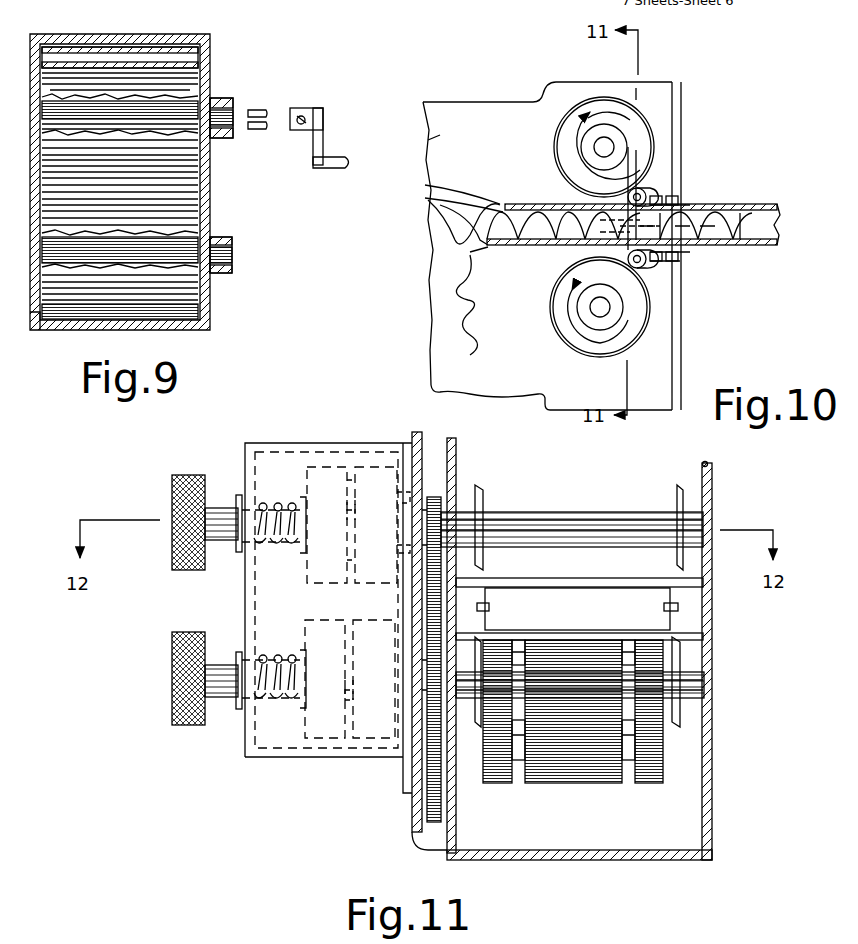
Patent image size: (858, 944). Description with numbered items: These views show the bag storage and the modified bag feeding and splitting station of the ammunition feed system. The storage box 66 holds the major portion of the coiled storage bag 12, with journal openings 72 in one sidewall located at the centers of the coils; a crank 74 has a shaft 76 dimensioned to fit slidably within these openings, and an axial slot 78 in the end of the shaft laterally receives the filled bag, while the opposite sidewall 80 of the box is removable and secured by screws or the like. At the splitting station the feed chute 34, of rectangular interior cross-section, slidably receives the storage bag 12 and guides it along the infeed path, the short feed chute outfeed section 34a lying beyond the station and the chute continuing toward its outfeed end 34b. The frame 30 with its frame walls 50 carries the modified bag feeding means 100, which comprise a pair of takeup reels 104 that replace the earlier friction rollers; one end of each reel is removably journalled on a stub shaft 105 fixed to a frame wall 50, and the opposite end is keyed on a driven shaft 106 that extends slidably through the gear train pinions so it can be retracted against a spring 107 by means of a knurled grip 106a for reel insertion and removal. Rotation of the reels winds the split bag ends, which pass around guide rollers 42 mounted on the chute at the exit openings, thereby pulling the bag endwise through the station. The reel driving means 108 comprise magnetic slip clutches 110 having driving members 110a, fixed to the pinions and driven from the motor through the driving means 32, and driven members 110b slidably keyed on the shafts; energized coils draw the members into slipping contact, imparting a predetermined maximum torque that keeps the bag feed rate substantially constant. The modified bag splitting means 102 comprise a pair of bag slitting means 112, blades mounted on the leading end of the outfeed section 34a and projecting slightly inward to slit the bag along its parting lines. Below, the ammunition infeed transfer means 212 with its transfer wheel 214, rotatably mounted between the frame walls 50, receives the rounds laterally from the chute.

In FIG. 9, the storage bag 12 is at (180, 215).
In FIG. 9, the storage box 66 is at (140, 30).
In FIG. 9, the journal openings 72 is at (233, 120).
In FIG. 9, the crank 74 is at (330, 130).
In FIG. 9, the shaft 76 is at (262, 108).
In FIG. 9, the slot 78 is at (298, 124).
In FIG. 9, the sidewall 80 is at (35, 318).
In FIG. 10, the frame 30 is at (473, 100).
In FIG. 10, the frame walls 50 is at (440, 140).
In FIG. 10, the bag feeding means 100 is at (554, 152).
In FIG. 11, the bag feeding means 100 is at (532, 510).
In FIG. 10, the takeup reels 104 is at (642, 160).
In FIG. 11, the takeup reels 104 is at (604, 492).
In FIG. 10, the guide rollers 42 is at (648, 193).
In FIG. 10, the bag splitting means 102 is at (672, 205).
In FIG. 10, the bag slitting means 112 is at (670, 261).
In FIG. 10, the feed chute 34 is at (760, 215).
In FIG. 11, the feed chute 34 is at (574, 588).
In FIG. 10, the feed chute outfeed section 34a is at (488, 248).
In FIG. 11, the feed chute outfeed section 34a is at (622, 612).
In FIG. 10, the web guide outlet 34b is at (780, 232).
In FIG. 11, the driving means 32 is at (432, 480).
In FIG. 11, the stub shafts 105 is at (694, 530).
In FIG. 11, the driven shafts 106 is at (216, 520).
In FIG. 11, the knurled grips 106a is at (196, 475).
In FIG. 11, the springs 107 is at (270, 502).
In FIG. 11, the reel driving means 108 is at (243, 765).
In FIG. 11, the magnetic slip clutches 110 is at (330, 465).
In FIG. 11, the driving members 110a is at (372, 465).
In FIG. 11, the driven members 110b is at (318, 446).
In FIG. 11, the ammunition infeed transfer means 212 is at (680, 762).
In FIG. 11, the ammunition transfer wheel 214 is at (664, 787).